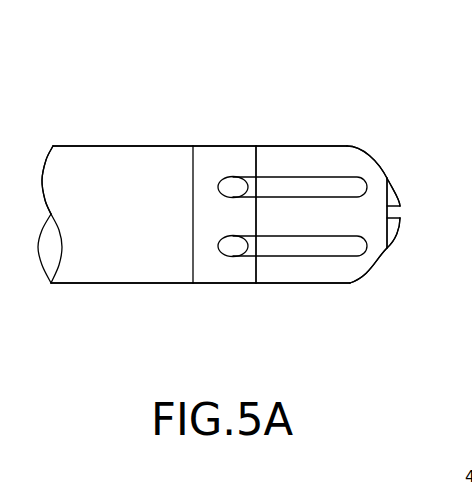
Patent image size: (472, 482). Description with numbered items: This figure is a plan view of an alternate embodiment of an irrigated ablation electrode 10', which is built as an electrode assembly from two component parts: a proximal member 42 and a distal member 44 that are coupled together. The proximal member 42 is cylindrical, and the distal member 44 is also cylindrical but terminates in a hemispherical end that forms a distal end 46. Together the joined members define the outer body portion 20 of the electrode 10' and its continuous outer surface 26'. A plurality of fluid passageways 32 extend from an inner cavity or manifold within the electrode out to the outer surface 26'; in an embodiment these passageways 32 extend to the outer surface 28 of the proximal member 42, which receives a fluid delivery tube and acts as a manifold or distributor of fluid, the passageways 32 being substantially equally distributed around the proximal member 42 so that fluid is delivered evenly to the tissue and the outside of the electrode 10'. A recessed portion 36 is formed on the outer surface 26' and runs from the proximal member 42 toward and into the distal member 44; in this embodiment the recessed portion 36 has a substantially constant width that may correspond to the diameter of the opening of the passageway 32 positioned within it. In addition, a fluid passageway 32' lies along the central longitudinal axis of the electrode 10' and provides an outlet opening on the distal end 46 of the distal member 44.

The electrode 10' is at (246, 187).
The outer body portion 20 is at (292, 300).
The outer surface 26' is at (303, 177).
The outer surface of proximal member 28 is at (200, 283).
The fluid passageway 32 is at (233, 295).
The fluid passageway 32' is at (408, 261).
The recessed portion 36 is at (330, 247).
The proximal member 42 is at (221, 124).
The distal member 44 is at (392, 130).
The distal end 46 is at (414, 184).